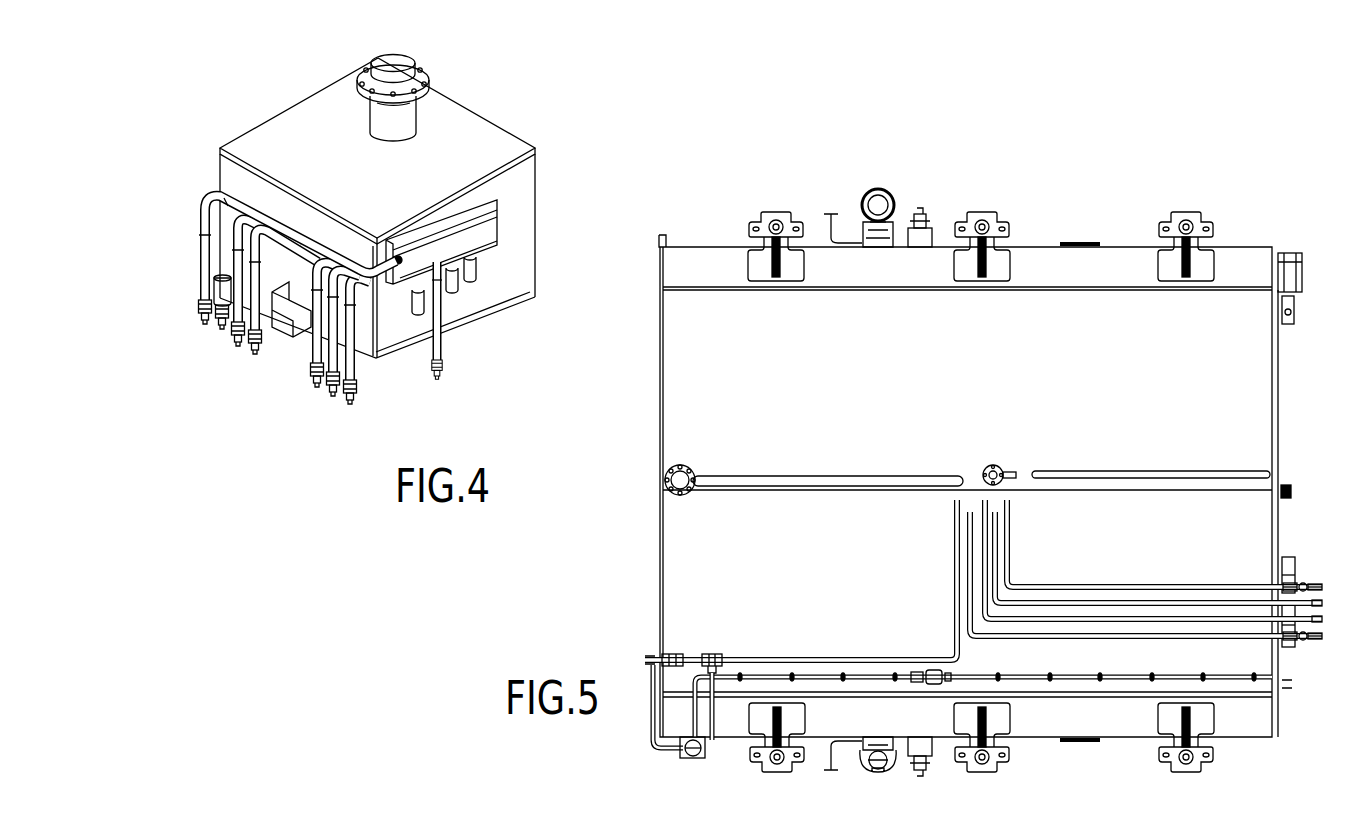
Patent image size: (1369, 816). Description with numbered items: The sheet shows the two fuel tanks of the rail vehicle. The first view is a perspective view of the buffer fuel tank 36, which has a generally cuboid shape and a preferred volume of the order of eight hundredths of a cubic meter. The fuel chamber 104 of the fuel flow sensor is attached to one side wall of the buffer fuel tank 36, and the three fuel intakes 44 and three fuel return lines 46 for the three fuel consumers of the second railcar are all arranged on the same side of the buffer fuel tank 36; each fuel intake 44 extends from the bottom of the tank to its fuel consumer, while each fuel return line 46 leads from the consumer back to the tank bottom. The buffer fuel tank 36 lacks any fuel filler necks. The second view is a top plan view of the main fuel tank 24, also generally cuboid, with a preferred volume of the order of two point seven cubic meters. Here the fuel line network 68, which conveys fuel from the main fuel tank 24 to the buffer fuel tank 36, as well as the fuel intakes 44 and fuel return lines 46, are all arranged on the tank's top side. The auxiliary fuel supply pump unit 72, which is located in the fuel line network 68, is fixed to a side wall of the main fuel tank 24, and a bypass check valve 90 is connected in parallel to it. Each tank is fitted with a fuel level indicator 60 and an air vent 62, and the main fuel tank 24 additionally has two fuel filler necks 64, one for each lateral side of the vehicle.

In FIG. 5, the main fuel tank 24 is at (1258, 375).
In FIG. 4, the buffer fuel tank 36 is at (507, 127).
In FIG. 4, the fuel intake 44 is at (240, 342).
In FIG. 5, the fuel intake 44 is at (1322, 587).
In FIG. 4, the fuel return line 46 is at (203, 328).
In FIG. 5, the fuel return line 46 is at (1322, 603).
In FIG. 5, the fuel level indicator 60 is at (1000, 465).
In FIG. 4, the air vent 62 is at (402, 67).
In FIG. 5, the air vent 62 is at (668, 480).
In FIG. 5, the fuel filler neck 64 is at (880, 208).
In FIG. 4, the fuel line network 68 is at (221, 329).
In FIG. 5, the fuel line network 68 is at (855, 658).
In FIG. 5, the auxiliary fuel supply pump unit 72 is at (690, 756).
In FIG. 5, the bypass check valve 90 is at (712, 658).
In FIG. 4, the fuel chamber 104 is at (483, 223).